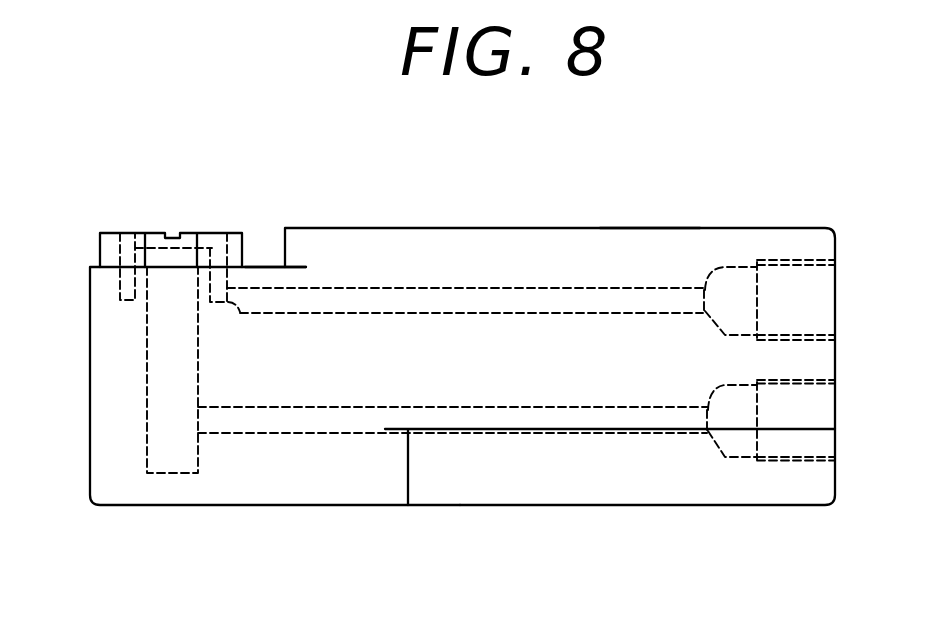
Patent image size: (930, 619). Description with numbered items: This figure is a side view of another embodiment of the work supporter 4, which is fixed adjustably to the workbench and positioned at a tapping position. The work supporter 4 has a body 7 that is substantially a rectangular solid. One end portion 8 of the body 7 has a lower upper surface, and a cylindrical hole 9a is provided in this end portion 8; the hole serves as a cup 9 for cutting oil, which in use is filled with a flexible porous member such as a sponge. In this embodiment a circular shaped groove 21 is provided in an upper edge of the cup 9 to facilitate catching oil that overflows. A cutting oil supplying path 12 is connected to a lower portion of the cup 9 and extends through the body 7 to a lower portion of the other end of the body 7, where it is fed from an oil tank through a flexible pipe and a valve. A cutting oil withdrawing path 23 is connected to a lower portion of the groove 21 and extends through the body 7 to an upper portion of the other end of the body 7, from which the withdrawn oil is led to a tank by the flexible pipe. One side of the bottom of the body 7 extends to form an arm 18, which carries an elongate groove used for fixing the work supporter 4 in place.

The work supporter 4 is at (629, 196).
The body 7 is at (825, 228).
The end portion 8 is at (258, 267).
The cup 9 is at (102, 348).
The cylindrical hole 9a is at (165, 402).
The cutting oil supplying path 12 is at (358, 420).
The arm 18 is at (543, 483).
The circular shaped groove 21 is at (128, 260).
The cutting oil withdrawing path 23 is at (438, 286).